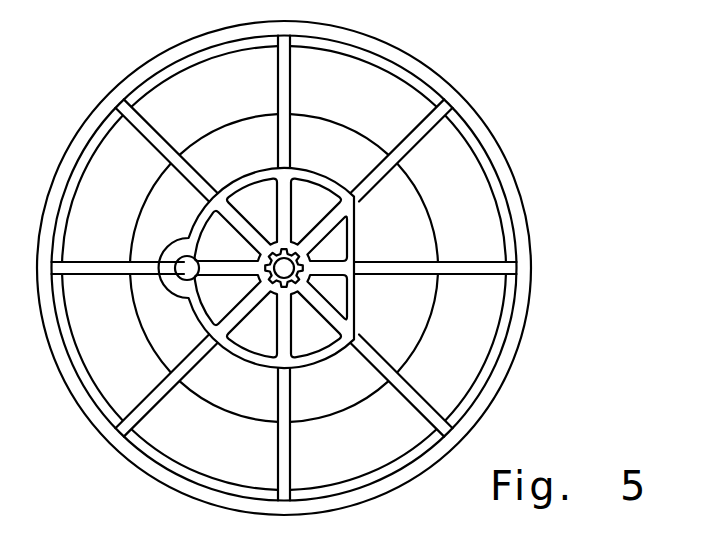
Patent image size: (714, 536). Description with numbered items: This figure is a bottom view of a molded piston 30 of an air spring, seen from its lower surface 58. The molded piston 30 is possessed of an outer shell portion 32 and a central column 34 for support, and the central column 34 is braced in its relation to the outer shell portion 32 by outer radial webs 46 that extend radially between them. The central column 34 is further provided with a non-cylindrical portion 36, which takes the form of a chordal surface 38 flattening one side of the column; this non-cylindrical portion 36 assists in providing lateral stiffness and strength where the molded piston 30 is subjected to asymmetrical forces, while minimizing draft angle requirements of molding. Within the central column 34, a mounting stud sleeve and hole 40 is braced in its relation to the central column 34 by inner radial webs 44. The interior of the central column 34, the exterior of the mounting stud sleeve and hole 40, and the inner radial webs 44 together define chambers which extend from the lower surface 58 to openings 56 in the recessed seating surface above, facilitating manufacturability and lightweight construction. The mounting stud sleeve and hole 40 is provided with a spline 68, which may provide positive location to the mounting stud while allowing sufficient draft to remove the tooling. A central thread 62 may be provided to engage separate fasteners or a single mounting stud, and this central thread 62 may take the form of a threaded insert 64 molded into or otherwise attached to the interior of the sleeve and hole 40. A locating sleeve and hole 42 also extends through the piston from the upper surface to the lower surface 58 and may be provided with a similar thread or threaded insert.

The molded piston 30 is at (483, 122).
The outer shell portion 32 is at (505, 160).
The central column 34 is at (295, 247).
The non-cylindrical portion 36 is at (356, 243).
The chordal surface 38 is at (357, 307).
The mounting stud sleeve and hole 40 is at (293, 282).
The locating sleeve and hole 42 is at (185, 272).
The inner radial webs 44 is at (278, 208).
The outer radial webs 46 is at (137, 133).
The openings 56 is at (257, 335).
The lower surface 58 is at (485, 409).
The central thread 62 is at (263, 260).
The threaded insert 64 is at (339, 176).
The spline 68 is at (266, 282).